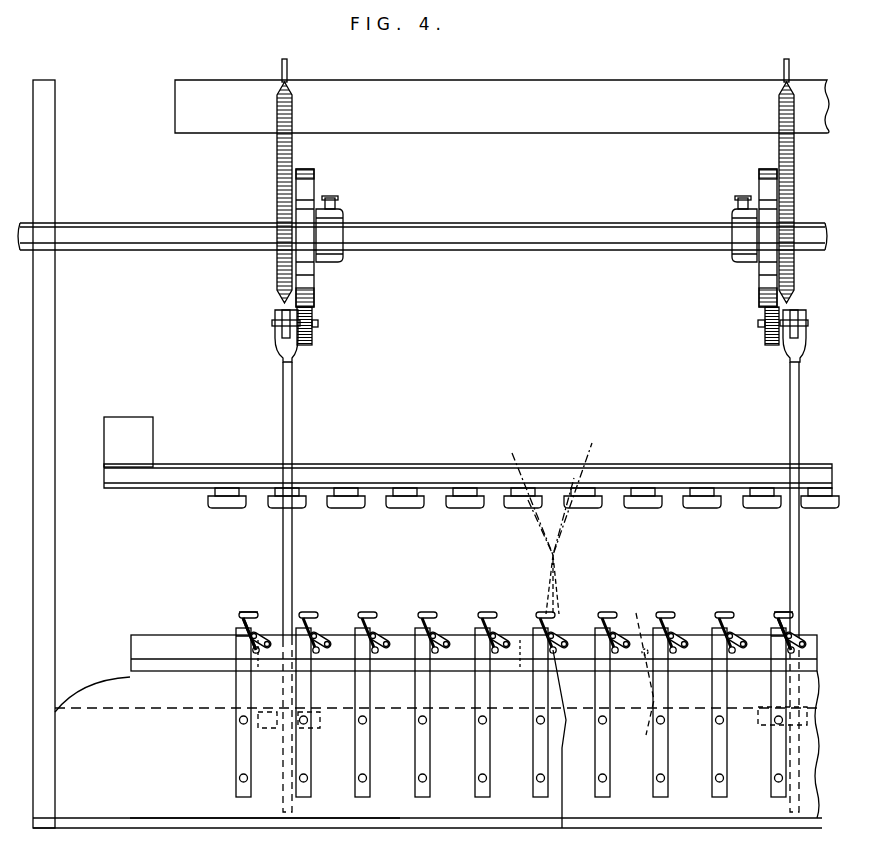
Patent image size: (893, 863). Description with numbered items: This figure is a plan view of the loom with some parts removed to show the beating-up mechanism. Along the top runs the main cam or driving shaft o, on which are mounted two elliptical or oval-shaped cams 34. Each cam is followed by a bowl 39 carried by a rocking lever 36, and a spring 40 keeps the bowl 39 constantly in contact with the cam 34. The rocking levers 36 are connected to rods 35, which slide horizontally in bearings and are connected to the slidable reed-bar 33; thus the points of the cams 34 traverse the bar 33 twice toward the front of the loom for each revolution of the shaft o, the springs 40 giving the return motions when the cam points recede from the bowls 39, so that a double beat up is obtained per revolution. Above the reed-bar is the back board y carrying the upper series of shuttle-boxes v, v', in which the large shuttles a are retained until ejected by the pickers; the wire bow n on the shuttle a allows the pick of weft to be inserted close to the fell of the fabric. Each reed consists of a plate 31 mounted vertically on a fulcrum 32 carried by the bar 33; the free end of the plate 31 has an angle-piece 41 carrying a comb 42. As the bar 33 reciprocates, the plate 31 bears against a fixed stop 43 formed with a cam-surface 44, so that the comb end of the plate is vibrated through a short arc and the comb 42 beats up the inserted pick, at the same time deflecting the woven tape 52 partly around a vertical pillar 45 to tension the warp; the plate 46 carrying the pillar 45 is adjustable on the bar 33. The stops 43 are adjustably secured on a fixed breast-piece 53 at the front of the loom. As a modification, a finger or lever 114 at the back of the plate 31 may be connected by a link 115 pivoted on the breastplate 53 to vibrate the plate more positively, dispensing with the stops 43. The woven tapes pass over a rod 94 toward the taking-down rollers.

The cam or driving shaft o is at (114, 230).
The spring 40 is at (276, 268).
The elliptical or oval-shaped cam 34 is at (316, 183).
The bowl 39 is at (313, 334).
The rocking lever 36 is at (273, 325).
The rod 35 is at (293, 418).
The back board y is at (230, 474).
The upper shuttle-box v is at (523, 514).
The thread clip v' is at (691, 513).
The shuttle a is at (540, 523).
The wire bow n is at (557, 582).
The bar 33 is at (150, 672).
The fixed stop 43 is at (362, 748).
The angle-piece 41 is at (364, 620).
The vertical pillar 45 is at (390, 622).
The plate 46 is at (378, 652).
The comb 42 is at (272, 612).
The plate 31 is at (240, 626).
The cam-surface 44 is at (234, 645).
The fulcrum 32 is at (262, 655).
The finger or lever 114 is at (644, 648).
The link 115 is at (633, 684).
The woven tape 52 is at (566, 811).
The fixed breast-piece 53 is at (437, 744).
The rod 94 is at (261, 822).